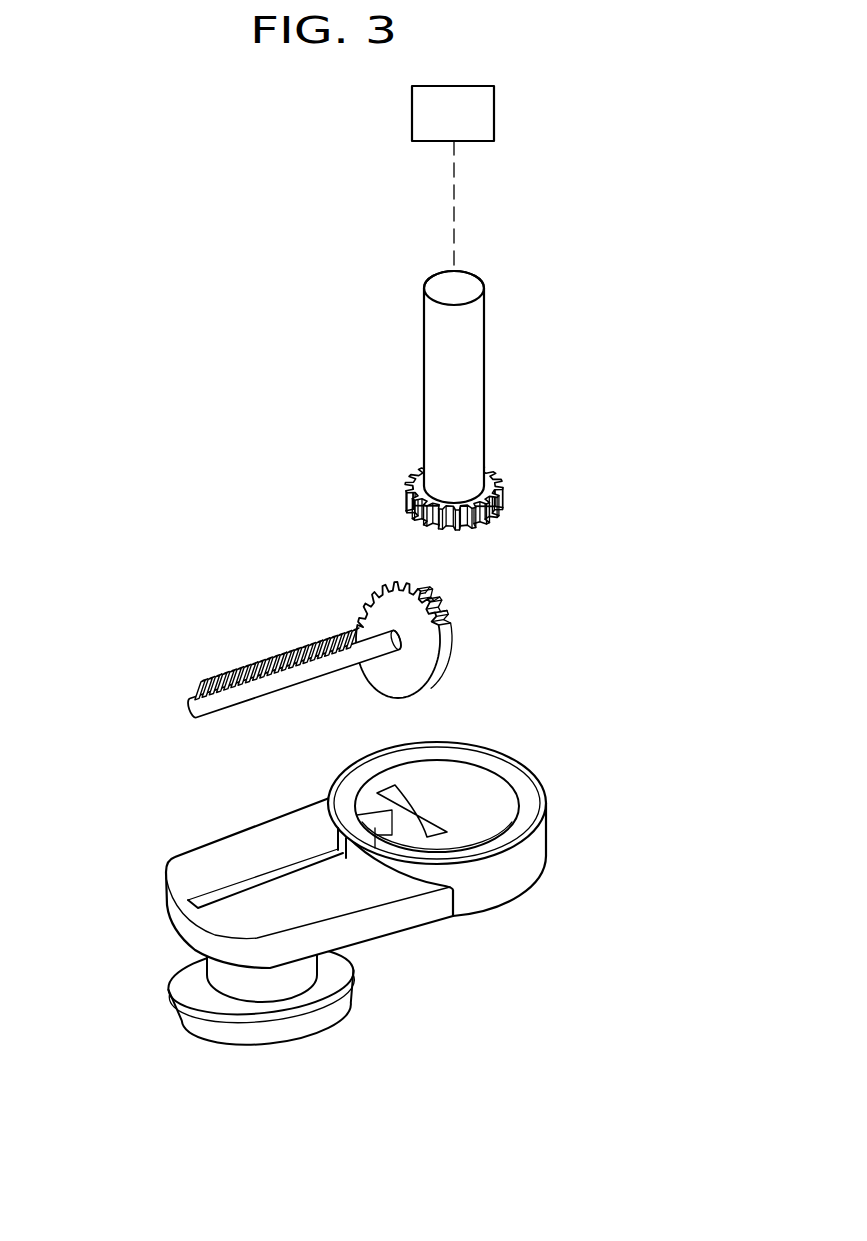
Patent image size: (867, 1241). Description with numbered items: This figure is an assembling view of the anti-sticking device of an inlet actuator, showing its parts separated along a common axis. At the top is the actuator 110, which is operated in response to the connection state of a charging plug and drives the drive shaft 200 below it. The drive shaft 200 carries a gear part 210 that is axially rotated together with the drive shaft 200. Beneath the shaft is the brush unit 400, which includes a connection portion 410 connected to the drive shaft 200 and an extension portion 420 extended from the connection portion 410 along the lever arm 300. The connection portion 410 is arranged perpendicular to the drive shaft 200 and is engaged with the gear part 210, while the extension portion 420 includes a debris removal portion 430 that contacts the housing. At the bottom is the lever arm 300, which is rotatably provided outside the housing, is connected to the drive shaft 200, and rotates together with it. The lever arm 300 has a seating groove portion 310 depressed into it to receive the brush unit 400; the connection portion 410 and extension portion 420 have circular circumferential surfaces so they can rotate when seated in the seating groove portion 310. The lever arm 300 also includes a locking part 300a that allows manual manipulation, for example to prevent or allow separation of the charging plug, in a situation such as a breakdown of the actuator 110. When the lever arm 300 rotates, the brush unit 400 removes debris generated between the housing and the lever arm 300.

The actuator 110 is at (494, 113).
The drive shaft 200 is at (477, 377).
The gear part 210 is at (495, 490).
The lever arm 300 is at (345, 938).
The locking part 300a is at (290, 1027).
The seating groove portion 310 is at (242, 888).
The brush unit 400 is at (342, 616).
The connection portion 410 is at (367, 605).
The extension portion 420 is at (183, 706).
The debris removal portion 430 is at (247, 658).